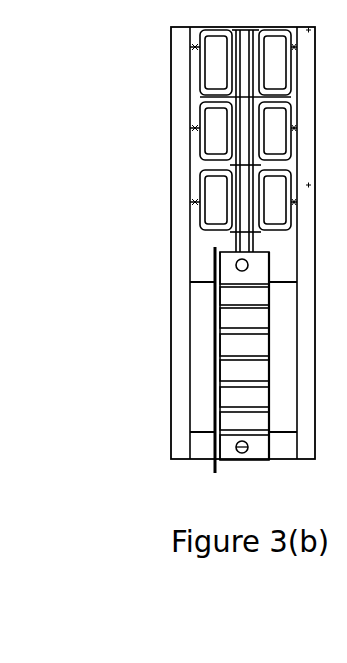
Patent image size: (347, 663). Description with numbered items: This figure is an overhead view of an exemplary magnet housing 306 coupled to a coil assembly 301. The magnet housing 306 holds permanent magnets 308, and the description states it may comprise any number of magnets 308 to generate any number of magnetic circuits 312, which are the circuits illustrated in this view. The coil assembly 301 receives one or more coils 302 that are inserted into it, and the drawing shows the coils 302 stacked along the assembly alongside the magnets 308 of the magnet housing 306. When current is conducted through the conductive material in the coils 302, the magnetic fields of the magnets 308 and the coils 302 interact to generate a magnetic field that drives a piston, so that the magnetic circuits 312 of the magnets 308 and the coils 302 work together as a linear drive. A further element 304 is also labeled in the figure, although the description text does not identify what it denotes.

The coil assembly 301 is at (208, 369).
The coils 302 is at (228, 398).
The bottom terminal block 304 is at (225, 447).
The magnet housing 306 is at (167, 262).
The magnets 308 is at (202, 330).
The magnetic circuits 312 is at (198, 192).